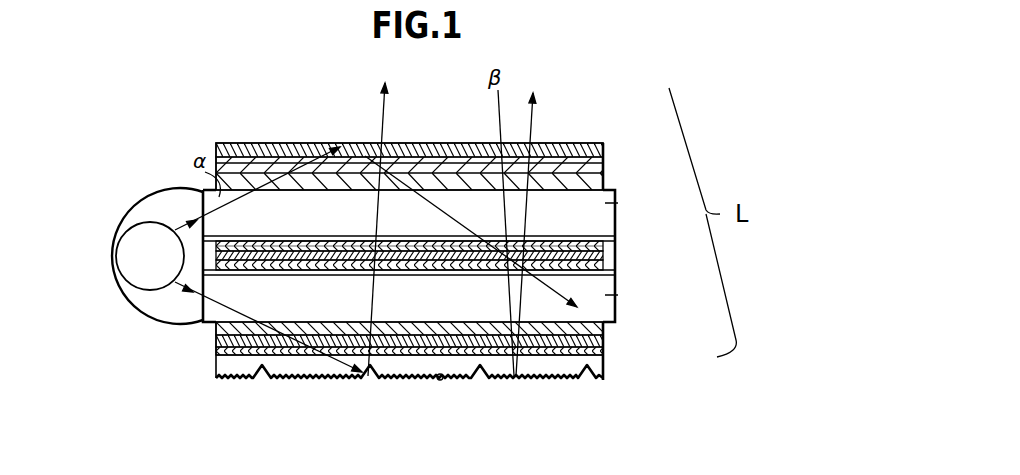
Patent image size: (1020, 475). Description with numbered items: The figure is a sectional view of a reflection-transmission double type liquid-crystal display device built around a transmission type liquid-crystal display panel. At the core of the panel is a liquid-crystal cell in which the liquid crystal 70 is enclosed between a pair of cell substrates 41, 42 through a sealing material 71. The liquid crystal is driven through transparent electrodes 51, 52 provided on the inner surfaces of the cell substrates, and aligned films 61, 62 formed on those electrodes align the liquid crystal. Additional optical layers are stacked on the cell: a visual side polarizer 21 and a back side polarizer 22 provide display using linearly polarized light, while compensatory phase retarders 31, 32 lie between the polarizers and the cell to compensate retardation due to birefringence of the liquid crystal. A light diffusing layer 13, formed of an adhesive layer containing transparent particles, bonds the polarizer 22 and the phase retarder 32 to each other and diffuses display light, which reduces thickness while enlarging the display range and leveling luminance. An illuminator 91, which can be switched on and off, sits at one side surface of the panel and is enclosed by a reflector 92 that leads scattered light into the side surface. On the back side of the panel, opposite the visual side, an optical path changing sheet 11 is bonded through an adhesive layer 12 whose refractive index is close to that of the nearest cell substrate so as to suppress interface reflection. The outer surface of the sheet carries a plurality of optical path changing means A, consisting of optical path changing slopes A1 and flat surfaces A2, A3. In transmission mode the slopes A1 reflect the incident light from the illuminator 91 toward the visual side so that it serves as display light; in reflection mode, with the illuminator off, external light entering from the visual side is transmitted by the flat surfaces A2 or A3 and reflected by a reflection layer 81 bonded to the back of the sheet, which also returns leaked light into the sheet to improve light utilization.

The optical path changing sheet 11 is at (604, 372).
The adhesive layer 12 is at (604, 357).
The light diffusing layer 13 is at (604, 160).
The visual side polarizer 21 is at (604, 346).
The back side polarizer 22 is at (604, 150).
The phase retarder 31 is at (604, 335).
The phase retarder 32 is at (604, 170).
The cell substrate 41 is at (612, 320).
The cell substrate 42 is at (604, 183).
The transparent electrode 51 is at (616, 273).
The transparent electrode 52 is at (616, 238).
The aligned film 61 is at (616, 265).
The aligned film 62 is at (616, 247).
The liquid crystal 70 is at (557, 252).
The sealing material 71 is at (616, 256).
The reflection layer 81 is at (599, 368).
The illuminator 91 is at (141, 284).
The reflector 92 is at (143, 203).
The optical path changing means A is at (262, 388).
The optical path changing slope A1 is at (365, 383).
The flat surface A2 is at (374, 383).
The flat surface A3 is at (441, 383).